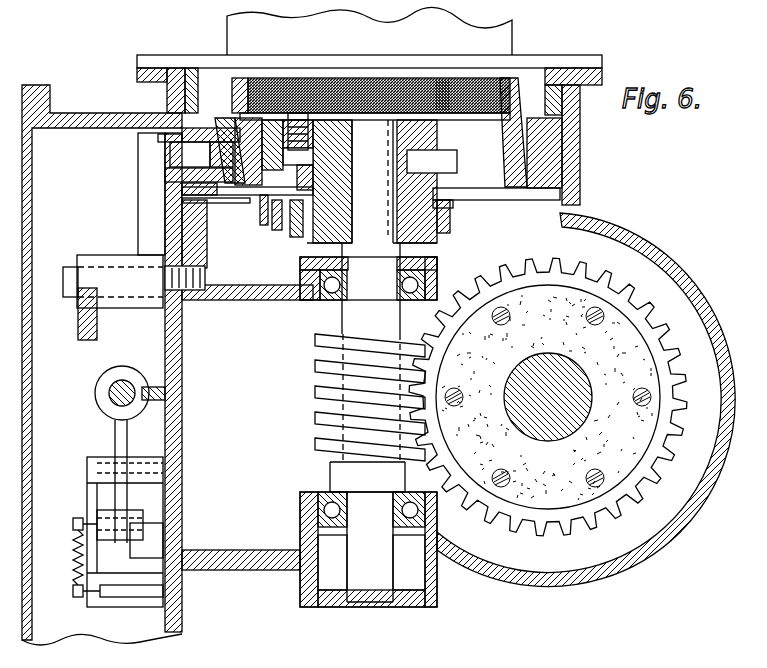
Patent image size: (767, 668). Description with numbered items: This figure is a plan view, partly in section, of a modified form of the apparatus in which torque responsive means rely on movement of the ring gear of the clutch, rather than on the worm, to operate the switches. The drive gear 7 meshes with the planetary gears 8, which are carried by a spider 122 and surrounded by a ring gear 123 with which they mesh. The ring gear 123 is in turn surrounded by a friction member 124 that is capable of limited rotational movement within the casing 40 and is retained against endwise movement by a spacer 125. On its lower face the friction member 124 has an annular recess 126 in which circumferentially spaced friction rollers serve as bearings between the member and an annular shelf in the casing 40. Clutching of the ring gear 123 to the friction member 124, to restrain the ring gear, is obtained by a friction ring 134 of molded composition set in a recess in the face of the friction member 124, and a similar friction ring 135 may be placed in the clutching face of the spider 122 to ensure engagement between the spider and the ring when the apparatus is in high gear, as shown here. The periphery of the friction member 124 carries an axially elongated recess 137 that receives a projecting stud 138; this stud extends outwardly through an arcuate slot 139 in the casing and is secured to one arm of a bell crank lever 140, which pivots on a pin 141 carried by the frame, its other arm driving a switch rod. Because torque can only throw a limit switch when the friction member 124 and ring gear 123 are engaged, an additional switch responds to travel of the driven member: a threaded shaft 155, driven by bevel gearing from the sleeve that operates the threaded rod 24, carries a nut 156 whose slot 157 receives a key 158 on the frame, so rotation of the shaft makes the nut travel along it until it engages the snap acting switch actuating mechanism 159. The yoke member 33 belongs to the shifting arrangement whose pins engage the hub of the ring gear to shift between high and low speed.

The drive gear 7 is at (370, 78).
The planetary gears 8 is at (265, 78).
The threaded rod 24 is at (548, 432).
The yoke member 33 is at (300, 228).
The casing 40 is at (660, 250).
The spider 122 is at (442, 80).
The ring gear 123 is at (515, 90).
The friction member 124 is at (578, 152).
The spacer 125 is at (552, 78).
The annular recess 126 is at (565, 200).
The friction ring 134 is at (238, 190).
The friction ring 135 is at (262, 160).
The elongated recess 137 is at (182, 172).
The projecting stud 138 is at (172, 155).
The arcuate slot 139 is at (160, 143).
The bell crank lever 140 is at (80, 330).
The pin 141 is at (68, 268).
The threaded shaft 155 is at (109, 393).
The nut 156 is at (124, 367).
The slot 157 is at (135, 405).
The key 158 is at (167, 394).
The switch actuating mechanism 159 is at (76, 525).